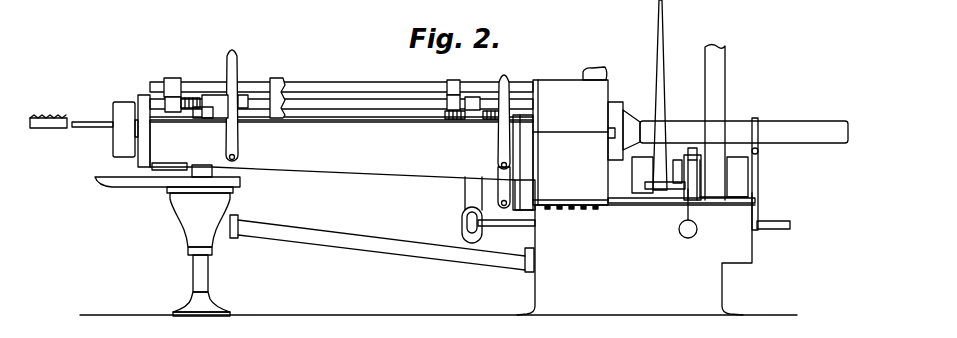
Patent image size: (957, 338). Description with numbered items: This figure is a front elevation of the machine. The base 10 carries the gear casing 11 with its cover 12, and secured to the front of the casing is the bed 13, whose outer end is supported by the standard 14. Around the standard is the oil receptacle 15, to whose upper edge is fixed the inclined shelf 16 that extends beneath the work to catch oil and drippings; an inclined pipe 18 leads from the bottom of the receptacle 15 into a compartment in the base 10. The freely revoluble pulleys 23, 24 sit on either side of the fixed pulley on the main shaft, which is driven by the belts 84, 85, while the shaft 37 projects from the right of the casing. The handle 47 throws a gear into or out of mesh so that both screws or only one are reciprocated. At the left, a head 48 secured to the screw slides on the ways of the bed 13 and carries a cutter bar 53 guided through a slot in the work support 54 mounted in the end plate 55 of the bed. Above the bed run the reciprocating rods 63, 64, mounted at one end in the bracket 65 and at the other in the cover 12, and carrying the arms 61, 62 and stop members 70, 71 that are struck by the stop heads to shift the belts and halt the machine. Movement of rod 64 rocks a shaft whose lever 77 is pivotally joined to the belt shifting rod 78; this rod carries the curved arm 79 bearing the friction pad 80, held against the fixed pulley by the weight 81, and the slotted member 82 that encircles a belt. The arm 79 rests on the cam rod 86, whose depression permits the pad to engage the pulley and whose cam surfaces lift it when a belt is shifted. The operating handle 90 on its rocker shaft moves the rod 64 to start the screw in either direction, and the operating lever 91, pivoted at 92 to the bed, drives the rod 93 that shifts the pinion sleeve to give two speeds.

The base 10 is at (722, 288).
The gear casing 11 is at (570, 170).
The cover 12 is at (557, 80).
The bed 13 is at (352, 169).
The standard 14 is at (208, 270).
The oil receptacle 15 is at (185, 220).
The inclined shelf 16 is at (126, 182).
The inclined pipe 18 is at (362, 242).
The pulley 23 is at (745, 172).
The pulley 24 is at (641, 190).
The shaft 37 is at (801, 121).
The handle 47 is at (598, 68).
The head 48 is at (215, 106).
The cutter bar 53 is at (54, 118).
The work support 54 is at (110, 135).
The end plate 55 is at (144, 99).
The arm 61 is at (172, 79).
The arm 62 is at (168, 101).
The reciprocating rod 63 is at (352, 86).
The reciprocating rod 64 is at (375, 103).
The bracket 65 is at (279, 92).
The stop member 70 is at (453, 82).
The stop member 71 is at (458, 102).
The lever 77 is at (463, 199).
The belt shifting rod 78 is at (500, 226).
The curved arm 79 is at (689, 152).
The friction pad 80 is at (696, 148).
The weight 81 is at (686, 239).
The slotted member 82 is at (660, 190).
The driving belt 84 is at (657, 8).
The driving belt 85 is at (722, 63).
The cam rod 86 is at (716, 206).
The operating handle 90 is at (240, 56).
The operating lever 91 is at (500, 142).
The pivot 92 is at (499, 164).
The rod 93 is at (518, 210).